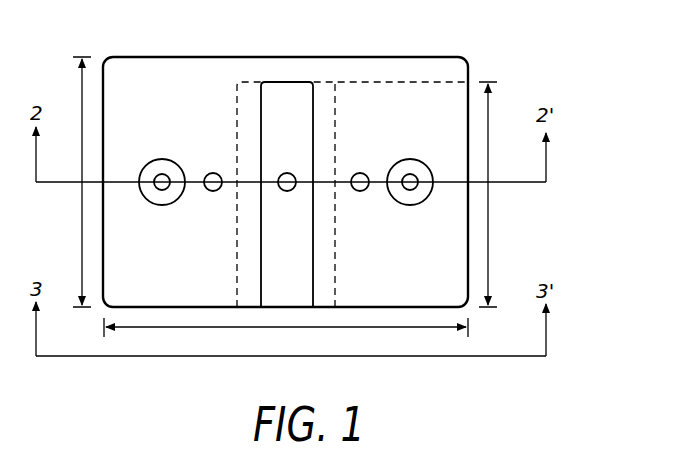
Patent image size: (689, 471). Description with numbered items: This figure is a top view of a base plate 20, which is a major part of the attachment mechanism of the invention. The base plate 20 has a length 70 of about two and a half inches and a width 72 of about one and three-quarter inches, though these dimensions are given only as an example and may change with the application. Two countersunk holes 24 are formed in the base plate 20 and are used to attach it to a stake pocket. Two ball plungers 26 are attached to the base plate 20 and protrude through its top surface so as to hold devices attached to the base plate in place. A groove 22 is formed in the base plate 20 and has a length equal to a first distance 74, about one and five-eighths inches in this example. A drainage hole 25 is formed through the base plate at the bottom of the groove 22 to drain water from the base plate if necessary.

The base plate 20 is at (381, 66).
The groove 22 is at (284, 118).
The countersunk holes 24 is at (171, 162).
The drainage hole 25 is at (287, 191).
The ball plungers 26 is at (216, 191).
The length 70 is at (193, 327).
The width 72 is at (82, 107).
The first distance 74 is at (488, 246).